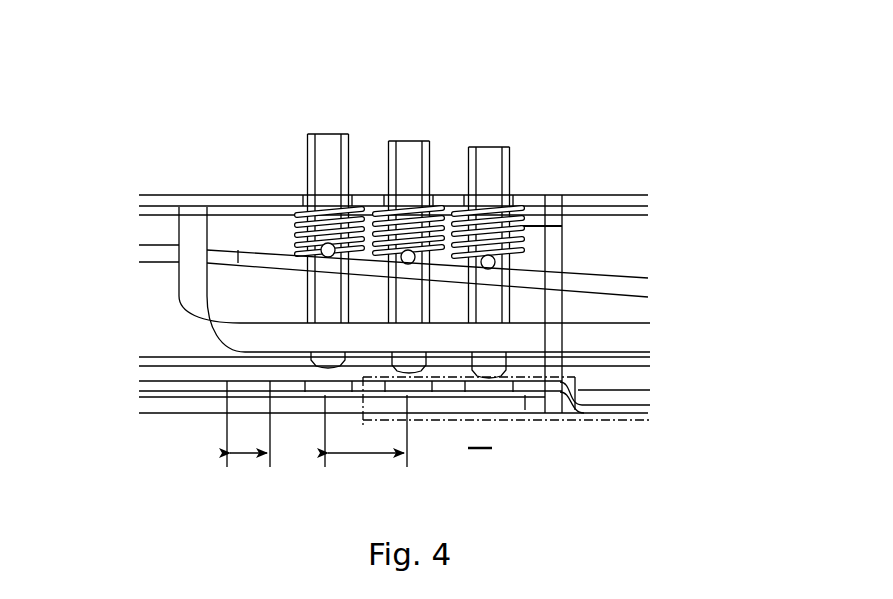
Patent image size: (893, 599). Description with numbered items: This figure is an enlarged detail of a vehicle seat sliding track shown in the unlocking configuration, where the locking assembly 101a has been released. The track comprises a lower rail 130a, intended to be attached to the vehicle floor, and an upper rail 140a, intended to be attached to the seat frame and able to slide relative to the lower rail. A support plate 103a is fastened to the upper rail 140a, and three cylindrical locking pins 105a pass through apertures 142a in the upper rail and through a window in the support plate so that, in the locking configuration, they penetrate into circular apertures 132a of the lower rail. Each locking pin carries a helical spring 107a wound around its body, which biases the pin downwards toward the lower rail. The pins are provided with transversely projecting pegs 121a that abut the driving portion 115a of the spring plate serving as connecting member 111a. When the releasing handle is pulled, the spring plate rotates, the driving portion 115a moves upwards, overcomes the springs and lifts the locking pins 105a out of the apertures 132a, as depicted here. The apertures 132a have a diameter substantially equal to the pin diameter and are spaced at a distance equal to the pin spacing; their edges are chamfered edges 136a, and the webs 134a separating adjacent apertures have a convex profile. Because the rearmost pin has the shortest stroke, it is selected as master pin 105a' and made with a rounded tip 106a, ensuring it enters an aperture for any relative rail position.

The aperture 142a is at (306, 198).
The locking pin 105a is at (450, 212).
The master pin 105a' is at (552, 236).
The upper rail 140a is at (147, 200).
The connecting member 111a is at (262, 243).
The helical spring 107a is at (562, 226).
The transversely projecting peg 121a is at (510, 268).
The driving portion 115a is at (617, 289).
The support plate 103a is at (607, 338).
The rounded tip 106a is at (553, 372).
The chamfered edge 136a is at (498, 388).
The lower rail 130a is at (212, 373).
The locking assembly 101a is at (174, 325).
The aperture 132a is at (352, 385).
The web 134a is at (468, 370).